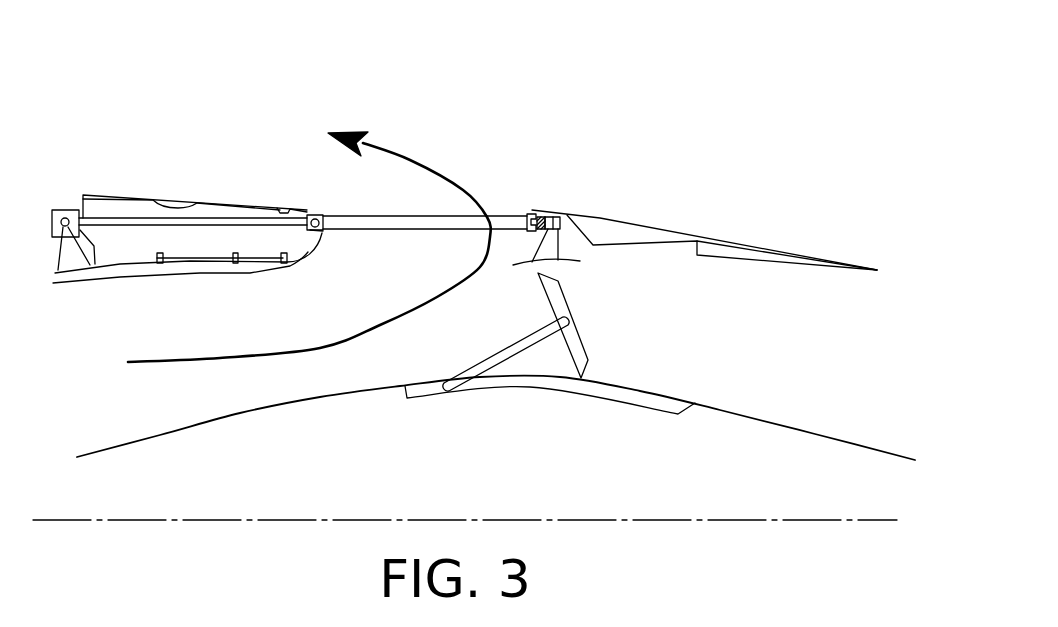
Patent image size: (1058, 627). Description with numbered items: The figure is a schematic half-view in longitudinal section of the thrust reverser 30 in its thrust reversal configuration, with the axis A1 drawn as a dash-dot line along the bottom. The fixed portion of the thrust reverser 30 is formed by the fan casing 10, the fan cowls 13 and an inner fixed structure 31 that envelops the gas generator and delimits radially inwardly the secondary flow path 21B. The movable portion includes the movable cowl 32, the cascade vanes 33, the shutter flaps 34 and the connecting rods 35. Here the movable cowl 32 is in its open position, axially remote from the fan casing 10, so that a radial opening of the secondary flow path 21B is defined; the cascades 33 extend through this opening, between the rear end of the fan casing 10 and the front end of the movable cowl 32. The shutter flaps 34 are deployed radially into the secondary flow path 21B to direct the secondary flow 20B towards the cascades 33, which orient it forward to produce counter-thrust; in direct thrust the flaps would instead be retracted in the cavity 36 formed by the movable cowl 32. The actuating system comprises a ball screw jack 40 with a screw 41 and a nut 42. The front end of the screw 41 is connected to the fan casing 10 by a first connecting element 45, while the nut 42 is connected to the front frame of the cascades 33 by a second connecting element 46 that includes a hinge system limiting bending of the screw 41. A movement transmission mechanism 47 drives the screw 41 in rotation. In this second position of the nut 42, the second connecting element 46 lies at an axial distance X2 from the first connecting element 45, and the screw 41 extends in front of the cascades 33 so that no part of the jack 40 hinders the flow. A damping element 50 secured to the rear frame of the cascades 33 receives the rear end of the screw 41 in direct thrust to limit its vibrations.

The fan casing 10 is at (75, 280).
The fan cowls 13 is at (130, 193).
The secondary flow 20B is at (297, 347).
The secondary flow path 21B is at (80, 426).
The thrust reverser 30 is at (567, 171).
The inner fixed structure 31 is at (240, 413).
The movable cowl 32 is at (657, 223).
The cascade vanes 33 is at (520, 215).
The shutter flaps 34 is at (583, 348).
The connecting rods 35 is at (503, 347).
The cavity 36 is at (653, 243).
The mechanical jack 40 is at (305, 106).
The screw 41 is at (222, 218).
The nut 42 is at (312, 216).
The first connecting element 45 is at (52, 208).
The second connecting element 46 is at (323, 231).
The movement transmission mechanism 47 is at (52, 226).
The damping element 50 is at (533, 207).
The axial distance X2 is at (314, 215).
The longitudinal axis A1 is at (43, 523).